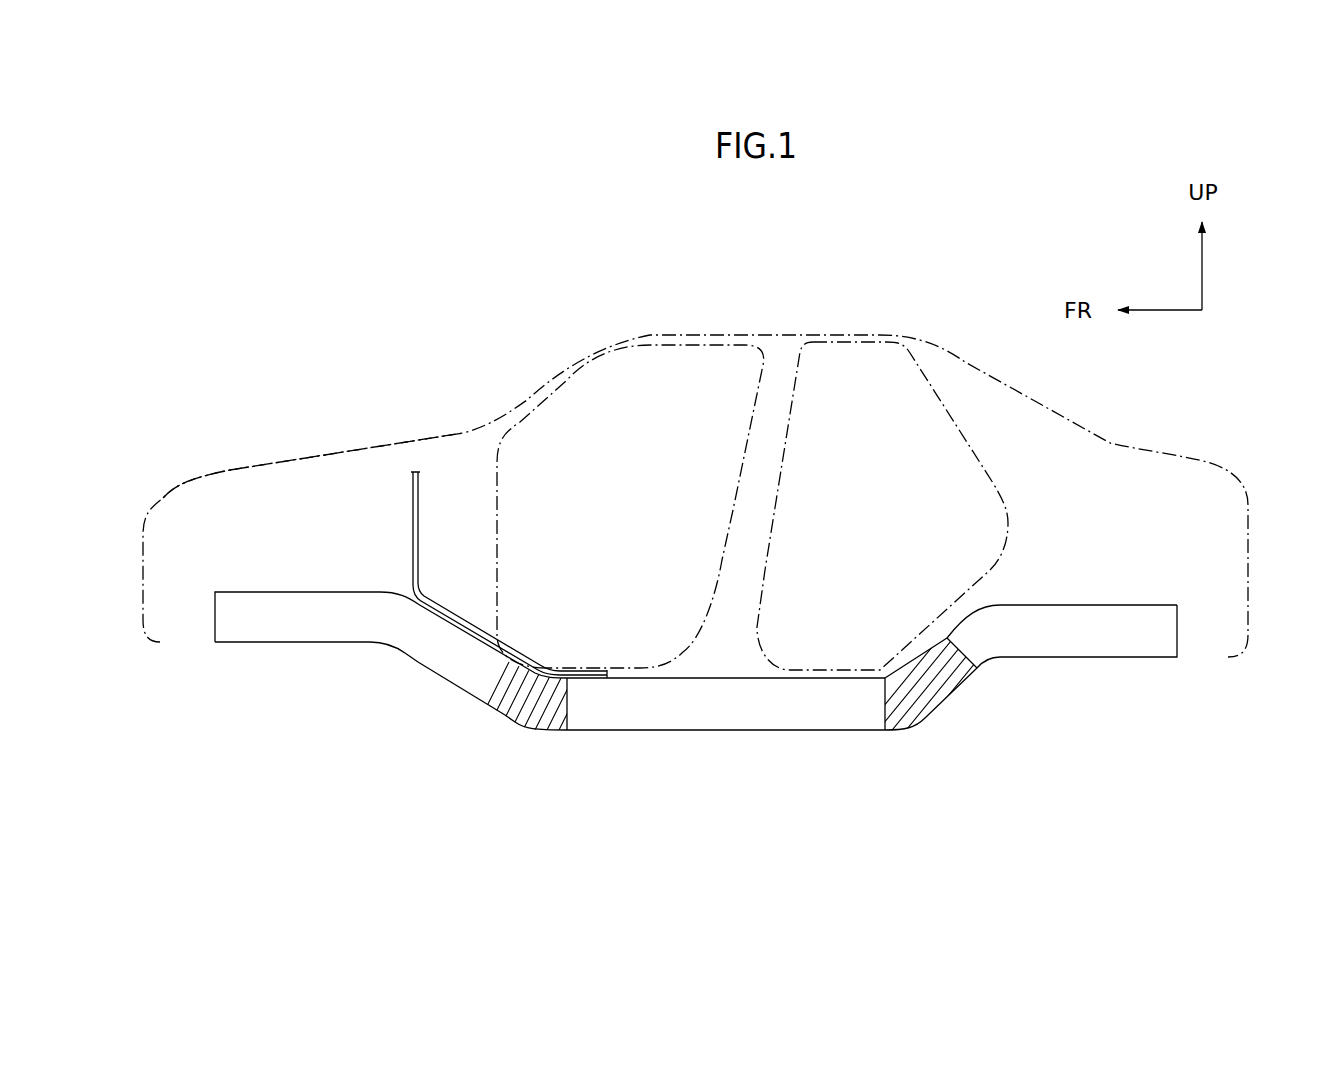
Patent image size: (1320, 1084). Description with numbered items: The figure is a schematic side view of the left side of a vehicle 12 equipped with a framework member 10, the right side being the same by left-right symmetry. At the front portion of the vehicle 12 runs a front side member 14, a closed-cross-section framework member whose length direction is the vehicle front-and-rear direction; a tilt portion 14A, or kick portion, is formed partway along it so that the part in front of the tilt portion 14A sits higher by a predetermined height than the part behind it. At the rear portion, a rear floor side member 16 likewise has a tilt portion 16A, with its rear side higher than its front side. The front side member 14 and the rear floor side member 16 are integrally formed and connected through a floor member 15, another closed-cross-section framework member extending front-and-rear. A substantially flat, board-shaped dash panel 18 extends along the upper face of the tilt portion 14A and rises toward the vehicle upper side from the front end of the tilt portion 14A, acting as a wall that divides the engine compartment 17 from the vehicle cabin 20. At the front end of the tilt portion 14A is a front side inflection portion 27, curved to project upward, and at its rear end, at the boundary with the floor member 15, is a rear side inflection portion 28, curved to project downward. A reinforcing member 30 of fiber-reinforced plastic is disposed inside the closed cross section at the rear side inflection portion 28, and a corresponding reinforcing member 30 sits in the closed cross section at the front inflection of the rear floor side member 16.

The framework member 10 is at (696, 722).
The vehicle 12 is at (500, 355).
The front side member 14 is at (391, 722).
The tilt portion 14A is at (451, 664).
The floor member 15 is at (733, 733).
The rear floor side member 16 is at (1031, 695).
The tilt portion 16A is at (1000, 660).
The engine compartment 17 is at (268, 522).
The dash panel 18 is at (410, 495).
The vehicle cabin 20 is at (628, 487).
The front side inflection portion 27 is at (385, 648).
The rear side inflection portion 28 is at (524, 736).
The reinforcing member 30 is at (555, 710).